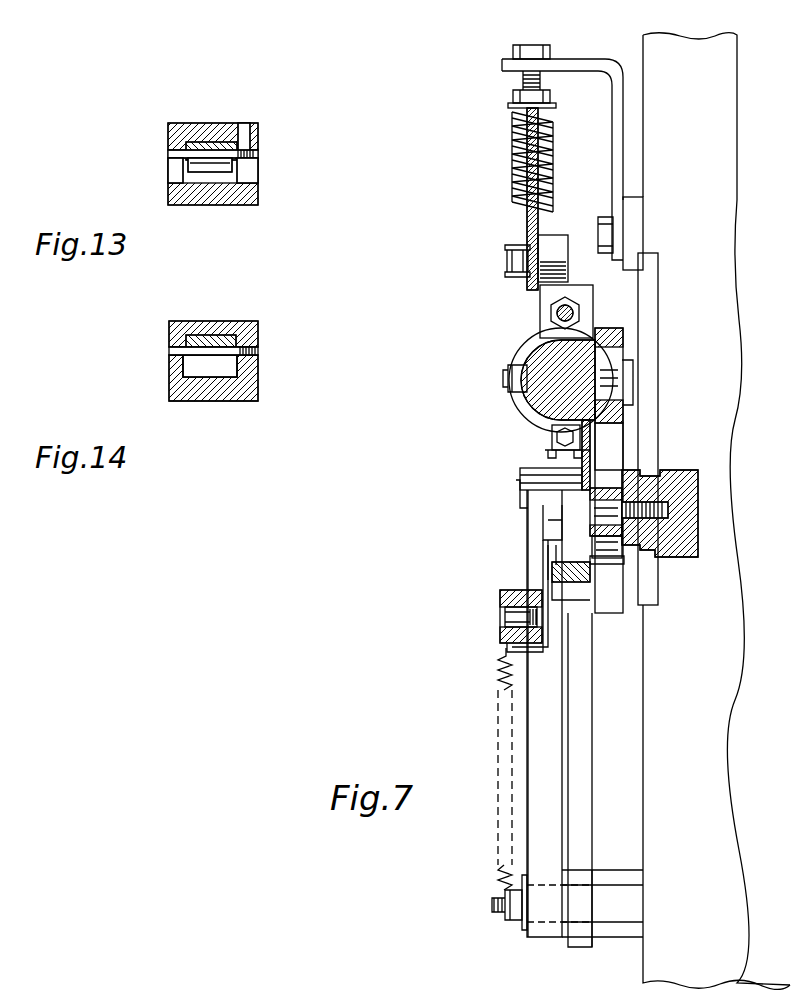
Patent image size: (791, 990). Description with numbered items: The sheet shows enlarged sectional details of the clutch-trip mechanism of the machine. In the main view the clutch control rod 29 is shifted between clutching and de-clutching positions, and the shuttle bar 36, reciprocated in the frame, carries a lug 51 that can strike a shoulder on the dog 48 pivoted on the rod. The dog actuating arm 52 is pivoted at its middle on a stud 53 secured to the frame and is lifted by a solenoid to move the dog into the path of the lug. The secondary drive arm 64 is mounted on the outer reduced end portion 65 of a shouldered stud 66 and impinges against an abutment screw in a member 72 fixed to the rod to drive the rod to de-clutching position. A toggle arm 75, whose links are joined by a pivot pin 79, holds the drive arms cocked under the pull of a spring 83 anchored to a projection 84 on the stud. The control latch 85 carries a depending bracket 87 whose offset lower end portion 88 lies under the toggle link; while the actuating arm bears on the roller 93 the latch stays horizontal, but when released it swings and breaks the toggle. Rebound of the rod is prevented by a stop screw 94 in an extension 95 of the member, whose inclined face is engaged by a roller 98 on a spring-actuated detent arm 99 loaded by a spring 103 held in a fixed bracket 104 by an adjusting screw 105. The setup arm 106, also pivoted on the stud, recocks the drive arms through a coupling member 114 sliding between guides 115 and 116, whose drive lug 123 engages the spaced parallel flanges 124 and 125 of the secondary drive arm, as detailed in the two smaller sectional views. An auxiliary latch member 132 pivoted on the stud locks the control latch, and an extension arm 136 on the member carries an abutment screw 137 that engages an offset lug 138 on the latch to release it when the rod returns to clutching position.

In FIG. 7, the clutch control rod 29 is at (525, 395).
In FIG. 7, the shuttle bar 36 is at (662, 290).
In FIG. 7, the dog 48 is at (612, 430).
In FIG. 7, the lug 51 is at (612, 328).
In FIG. 7, the dog actuating arm 52 is at (622, 548).
In FIG. 7, the stud 53 is at (600, 513).
In FIG. 13, the secondary drive arm 64 is at (268, 194).
In FIG. 14, the secondary drive arm 64 is at (260, 390).
In FIG. 7, the secondary drive arm 64 is at (518, 817).
In FIG. 7, the outer reduced end portion 65 is at (545, 925).
In FIG. 7, the shouldered stud 66 is at (620, 946).
In FIG. 7, the member 72 is at (520, 476).
In FIG. 7, the toggle arm 75 is at (490, 603).
In FIG. 7, the pivot pin 79 is at (505, 620).
In FIG. 7, the spring 83 is at (498, 686).
In FIG. 7, the projection 84 is at (484, 908).
In FIG. 7, the control latch 85 is at (550, 553).
In FIG. 7, the depending bracket 87 is at (552, 573).
In FIG. 7, the offset lower end portion 88 is at (535, 652).
In FIG. 7, the roller 93 is at (610, 570).
In FIG. 7, the stop screw 94 is at (556, 313).
In FIG. 7, the extension 95 is at (540, 299).
In FIG. 7, the roller 98 is at (555, 236).
In FIG. 7, the detent arm 99 is at (525, 226).
In FIG. 7, the spring 103 is at (510, 136).
In FIG. 7, the fixed bracket 104 is at (570, 60).
In FIG. 7, the adjusting screw 105 is at (512, 96).
In FIG. 13, the setup arm 106 is at (251, 130).
In FIG. 14, the setup arm 106 is at (258, 327).
In FIG. 7, the setup arm 106 is at (600, 776).
In FIG. 13, the coupling member 114 is at (210, 142).
In FIG. 14, the coupling member 114 is at (218, 335).
In FIG. 13, the guide 115 is at (186, 148).
In FIG. 14, the guide 115 is at (186, 345).
In FIG. 13, the guide 116 is at (252, 153).
In FIG. 14, the guide 116 is at (256, 348).
In FIG. 13, the drive lug 123 is at (220, 168).
In FIG. 13, the flange 124 is at (172, 175).
In FIG. 14, the flange 124 is at (172, 362).
In FIG. 13, the flange 125 is at (256, 167).
In FIG. 14, the flange 125 is at (258, 362).
In FIG. 7, the auxiliary latch member 132 is at (590, 455).
In FIG. 7, the extension arm 136 is at (548, 455).
In FIG. 7, the abutment screw 137 is at (557, 438).
In FIG. 7, the offset lug 138 is at (552, 432).